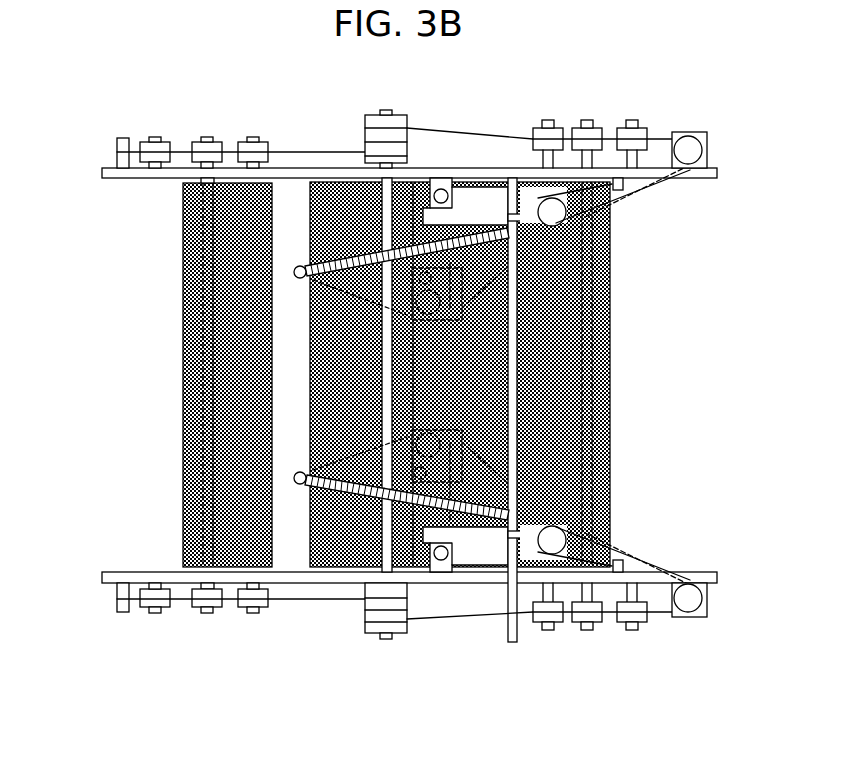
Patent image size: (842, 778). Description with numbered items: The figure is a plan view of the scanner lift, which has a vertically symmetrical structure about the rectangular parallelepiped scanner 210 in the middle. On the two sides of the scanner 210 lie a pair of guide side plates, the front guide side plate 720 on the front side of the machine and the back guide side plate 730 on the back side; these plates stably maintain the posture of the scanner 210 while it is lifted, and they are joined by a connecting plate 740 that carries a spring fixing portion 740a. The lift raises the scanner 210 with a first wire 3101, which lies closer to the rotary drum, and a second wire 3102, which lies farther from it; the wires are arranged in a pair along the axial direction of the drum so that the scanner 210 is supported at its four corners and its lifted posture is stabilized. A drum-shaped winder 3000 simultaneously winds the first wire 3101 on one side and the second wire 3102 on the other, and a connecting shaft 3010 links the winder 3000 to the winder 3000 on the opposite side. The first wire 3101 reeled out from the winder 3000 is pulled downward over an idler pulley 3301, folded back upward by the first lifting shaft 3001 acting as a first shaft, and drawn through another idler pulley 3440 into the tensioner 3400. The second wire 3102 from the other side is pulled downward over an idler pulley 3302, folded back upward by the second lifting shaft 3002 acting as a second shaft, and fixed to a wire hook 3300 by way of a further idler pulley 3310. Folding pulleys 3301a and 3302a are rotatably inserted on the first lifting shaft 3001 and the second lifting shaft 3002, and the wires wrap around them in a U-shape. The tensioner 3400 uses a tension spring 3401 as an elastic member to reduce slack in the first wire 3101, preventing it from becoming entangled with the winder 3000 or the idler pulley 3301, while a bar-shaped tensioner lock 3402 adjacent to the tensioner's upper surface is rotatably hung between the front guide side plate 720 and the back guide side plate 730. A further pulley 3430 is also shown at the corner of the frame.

The scanner 210 is at (610, 250).
The front guide side plate 720 is at (132, 572).
The back guide side plate 730 is at (133, 178).
The connecting plate 740 is at (272, 312).
The spring fixing portion 740a is at (294, 478).
The winder 3000 is at (386, 641).
The first lifting shaft 3001 is at (592, 310).
The second lifting shaft 3002 is at (202, 389).
The connecting shaft 3010 is at (387, 348).
The first wire 3101 is at (610, 617).
The second wire 3102 is at (237, 601).
The wire hook 3300 is at (116, 603).
The idler pulley 3301 is at (542, 630).
The folding pulley 3301a is at (578, 630).
The idler pulley 3302 is at (262, 611).
The folding pulley 3302a is at (206, 613).
The idler pulley 3310 is at (155, 613).
The tensioner 3400 is at (504, 423).
The tension spring 3401 is at (462, 497).
The tensioner lock 3402 is at (505, 630).
The pulley 3430 is at (703, 598).
The idler pulley 3440 is at (645, 630).